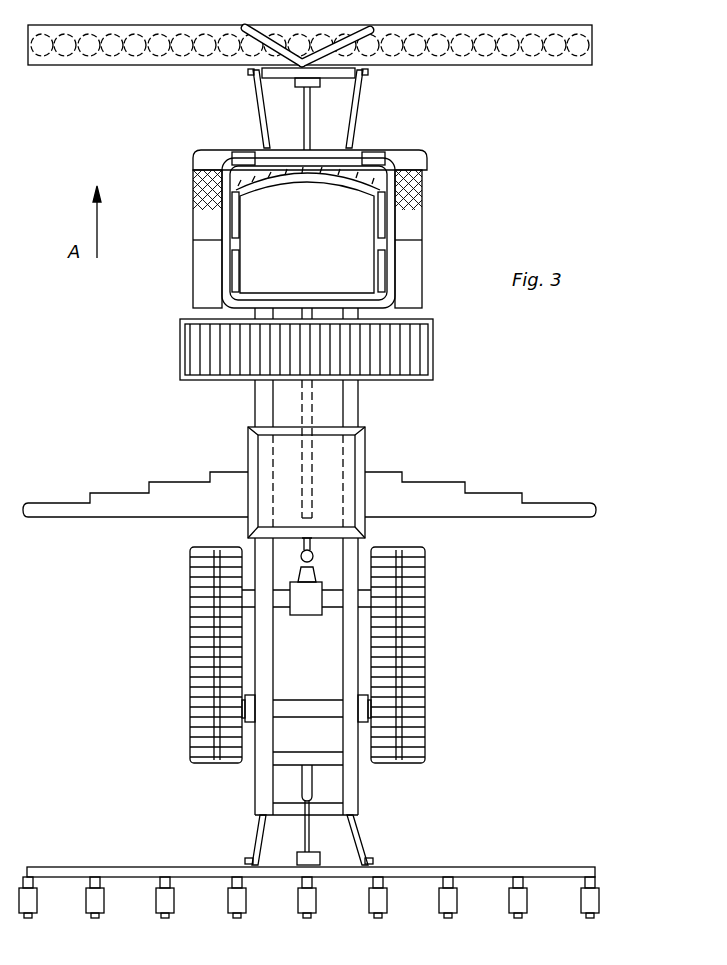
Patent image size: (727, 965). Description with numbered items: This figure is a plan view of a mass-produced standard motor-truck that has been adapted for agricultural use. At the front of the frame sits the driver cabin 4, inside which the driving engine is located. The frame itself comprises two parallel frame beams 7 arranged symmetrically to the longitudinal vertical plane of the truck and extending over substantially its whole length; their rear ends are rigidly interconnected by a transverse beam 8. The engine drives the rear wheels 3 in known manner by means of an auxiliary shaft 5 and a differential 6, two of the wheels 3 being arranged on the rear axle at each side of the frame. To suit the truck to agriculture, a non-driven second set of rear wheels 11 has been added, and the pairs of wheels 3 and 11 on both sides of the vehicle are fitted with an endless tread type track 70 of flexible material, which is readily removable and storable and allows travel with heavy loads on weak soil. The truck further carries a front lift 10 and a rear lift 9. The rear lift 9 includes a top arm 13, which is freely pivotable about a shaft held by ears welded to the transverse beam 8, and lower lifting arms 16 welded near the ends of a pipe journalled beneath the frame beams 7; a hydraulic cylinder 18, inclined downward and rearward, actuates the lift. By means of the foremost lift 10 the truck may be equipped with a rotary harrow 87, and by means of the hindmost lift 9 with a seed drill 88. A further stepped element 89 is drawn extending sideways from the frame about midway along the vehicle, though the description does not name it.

The rotary harrow 87 is at (478, 67).
The front lift 10 is at (262, 107).
The driver cabin 4 is at (398, 265).
The endless tread type track 70 is at (436, 346).
The frame beams 7 is at (255, 400).
The auxiliary shaft 5 is at (305, 413).
The stepped platform 89 is at (516, 518).
The rear wheels 3 is at (190, 562).
The second set of rear wheels 11 is at (190, 720).
The differential 6 is at (306, 617).
The transverse beam 8 is at (306, 785).
The hydraulic cylinder 18 is at (303, 782).
The top arm 13 is at (305, 831).
The rear lift 9 is at (311, 839).
The lower lifting arm 16 is at (256, 840).
The seed drill 88 is at (490, 866).